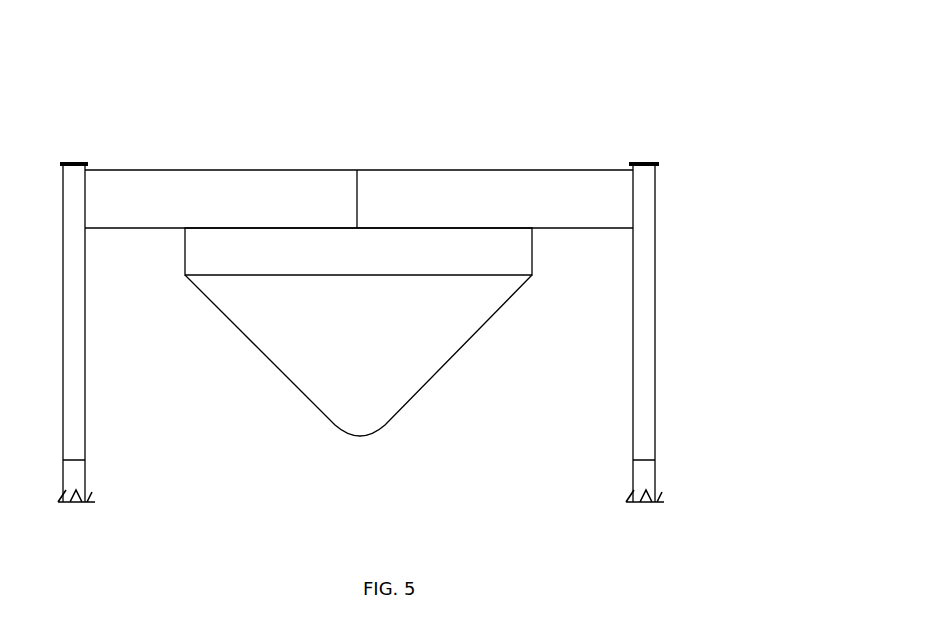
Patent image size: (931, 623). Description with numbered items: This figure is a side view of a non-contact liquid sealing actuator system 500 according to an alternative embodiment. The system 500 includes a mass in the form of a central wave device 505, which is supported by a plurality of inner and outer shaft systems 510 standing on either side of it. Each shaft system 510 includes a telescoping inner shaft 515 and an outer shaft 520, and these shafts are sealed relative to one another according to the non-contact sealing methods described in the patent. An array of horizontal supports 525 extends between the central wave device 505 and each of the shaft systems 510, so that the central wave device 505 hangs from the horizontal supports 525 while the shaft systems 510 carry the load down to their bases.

The non-contact liquid sealing actuator system 500 is at (244, 84).
The central wave device 505 is at (405, 350).
The inner and outer shaft systems 510 is at (88, 360).
The telescoping inner shaft 515 is at (77, 478).
The outer shaft 520 is at (87, 425).
The horizontal supports 525 is at (458, 168).